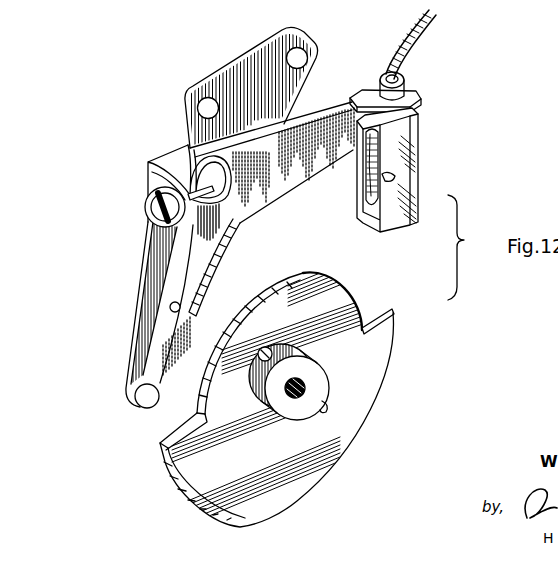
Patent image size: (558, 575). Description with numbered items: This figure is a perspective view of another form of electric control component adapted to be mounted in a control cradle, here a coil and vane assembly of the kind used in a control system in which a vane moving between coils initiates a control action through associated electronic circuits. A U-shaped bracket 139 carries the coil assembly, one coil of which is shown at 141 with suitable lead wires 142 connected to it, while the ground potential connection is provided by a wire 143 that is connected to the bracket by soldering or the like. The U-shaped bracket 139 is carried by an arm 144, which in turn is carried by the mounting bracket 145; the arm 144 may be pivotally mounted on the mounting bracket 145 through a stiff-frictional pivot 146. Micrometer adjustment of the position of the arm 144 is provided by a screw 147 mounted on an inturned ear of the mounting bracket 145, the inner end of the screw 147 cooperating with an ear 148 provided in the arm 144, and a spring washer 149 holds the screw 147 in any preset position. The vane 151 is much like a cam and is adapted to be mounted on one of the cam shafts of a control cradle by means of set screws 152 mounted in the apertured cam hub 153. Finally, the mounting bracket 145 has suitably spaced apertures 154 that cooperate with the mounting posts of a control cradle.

The U-shaped bracket 139 is at (417, 157).
The coil 141 is at (372, 200).
The lead wires 142 is at (400, 53).
The wire 143 is at (385, 178).
The arm 144 is at (313, 123).
The mounting bracket 145 is at (142, 258).
The stiff-frictional pivot 146 is at (130, 396).
The screw 147 is at (148, 200).
The ear 148 is at (188, 140).
The spring washer 149 is at (158, 158).
The vane 151 is at (375, 405).
The set screws 152 is at (322, 404).
The cam hub 153 is at (293, 408).
The apertures 154 is at (213, 97).